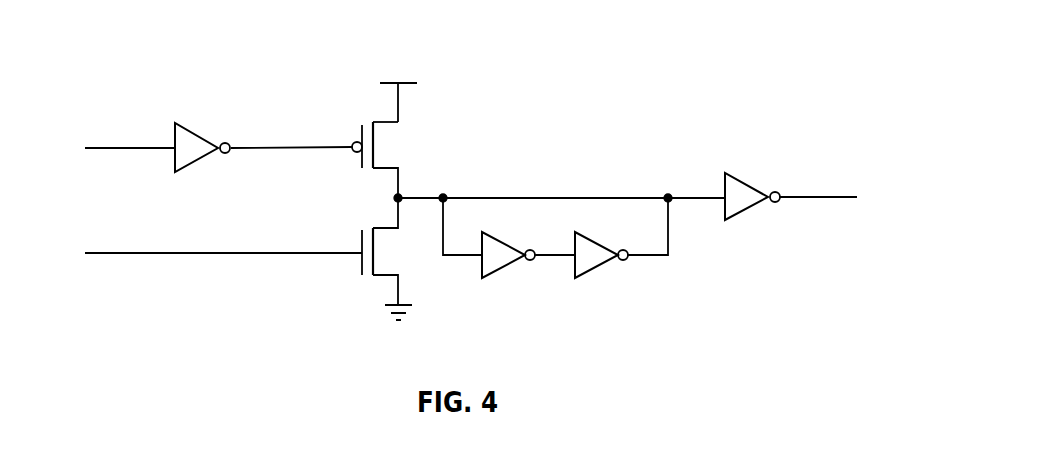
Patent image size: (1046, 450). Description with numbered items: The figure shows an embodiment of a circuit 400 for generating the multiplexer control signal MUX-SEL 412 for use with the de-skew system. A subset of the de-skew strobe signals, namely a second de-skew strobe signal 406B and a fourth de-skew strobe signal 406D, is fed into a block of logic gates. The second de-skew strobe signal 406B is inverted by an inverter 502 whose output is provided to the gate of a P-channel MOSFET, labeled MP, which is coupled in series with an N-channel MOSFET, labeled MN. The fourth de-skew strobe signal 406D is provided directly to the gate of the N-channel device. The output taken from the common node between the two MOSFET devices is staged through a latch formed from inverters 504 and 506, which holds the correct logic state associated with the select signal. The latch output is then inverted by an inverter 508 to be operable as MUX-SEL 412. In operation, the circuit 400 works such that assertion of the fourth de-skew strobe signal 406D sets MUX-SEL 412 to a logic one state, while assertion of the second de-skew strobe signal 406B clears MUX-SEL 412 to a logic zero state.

The circuit 400 is at (668, 74).
The de-skew strobe signal S2 406B is at (110, 131).
The de-skew strobe signal S4 406D is at (208, 272).
The inverter 502 is at (231, 138).
The inverter 504 is at (529, 274).
The inverter 506 is at (622, 274).
The inverter 508 is at (773, 214).
The MUX-SEL 412 is at (840, 189).